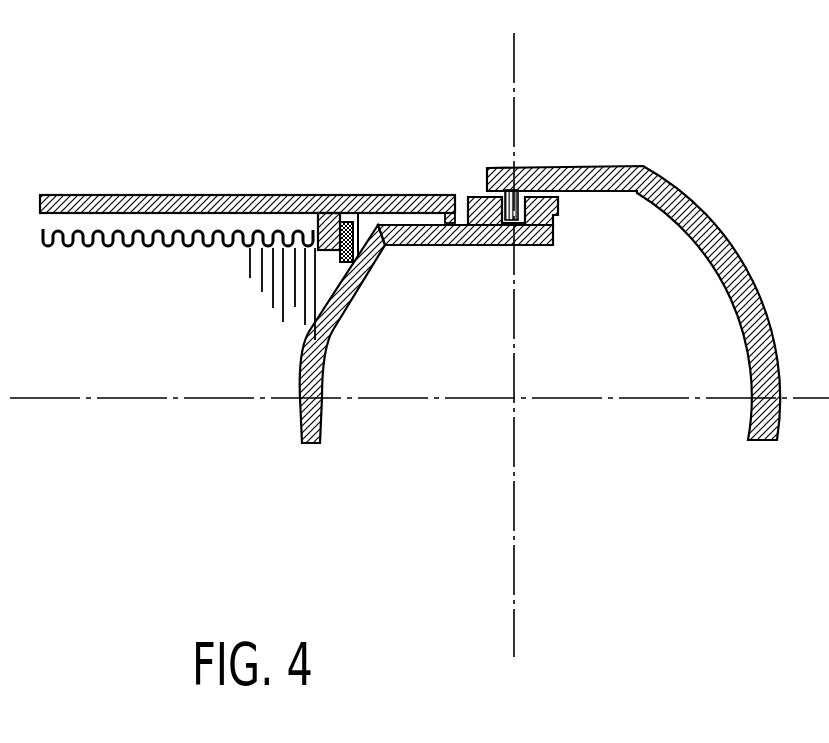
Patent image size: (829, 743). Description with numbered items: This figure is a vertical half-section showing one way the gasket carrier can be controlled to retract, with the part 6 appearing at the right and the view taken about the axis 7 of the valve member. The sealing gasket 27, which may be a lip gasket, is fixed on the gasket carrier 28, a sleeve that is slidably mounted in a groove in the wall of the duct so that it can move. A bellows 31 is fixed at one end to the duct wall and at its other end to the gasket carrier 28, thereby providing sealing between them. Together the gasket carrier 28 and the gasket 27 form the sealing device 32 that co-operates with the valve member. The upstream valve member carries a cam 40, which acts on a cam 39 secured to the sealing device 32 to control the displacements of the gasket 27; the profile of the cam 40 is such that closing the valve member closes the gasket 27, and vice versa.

The housing shell 6 is at (730, 240).
The axis 7 is at (525, 344).
The sealing gasket 27 is at (345, 196).
The gasket carrier 28 is at (180, 195).
The bellows 31 is at (100, 232).
The sealing device 32 is at (205, 258).
The cam 39 is at (437, 248).
The cam 40 is at (478, 247).